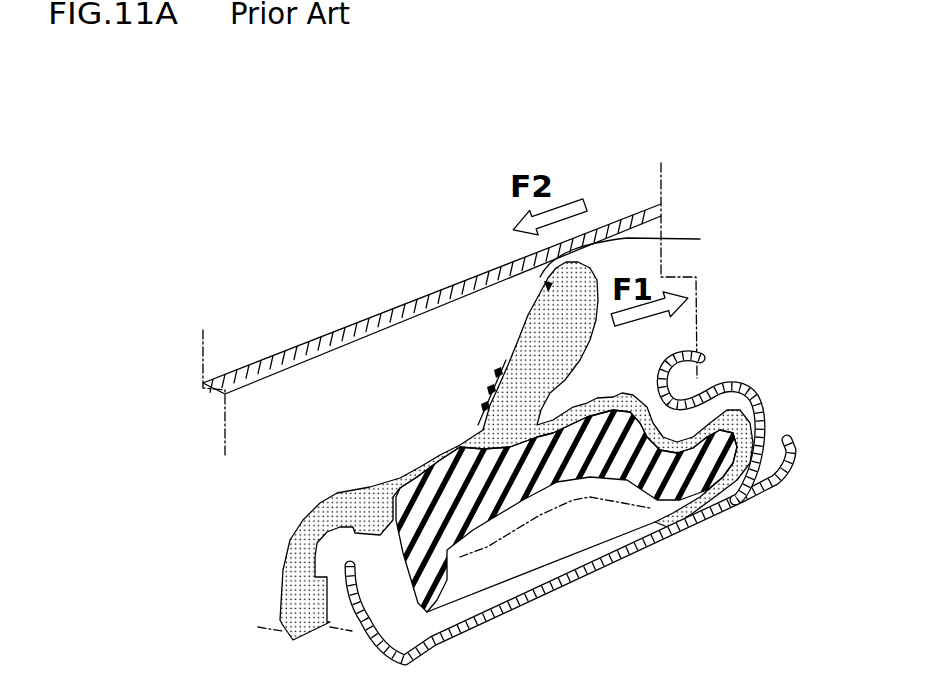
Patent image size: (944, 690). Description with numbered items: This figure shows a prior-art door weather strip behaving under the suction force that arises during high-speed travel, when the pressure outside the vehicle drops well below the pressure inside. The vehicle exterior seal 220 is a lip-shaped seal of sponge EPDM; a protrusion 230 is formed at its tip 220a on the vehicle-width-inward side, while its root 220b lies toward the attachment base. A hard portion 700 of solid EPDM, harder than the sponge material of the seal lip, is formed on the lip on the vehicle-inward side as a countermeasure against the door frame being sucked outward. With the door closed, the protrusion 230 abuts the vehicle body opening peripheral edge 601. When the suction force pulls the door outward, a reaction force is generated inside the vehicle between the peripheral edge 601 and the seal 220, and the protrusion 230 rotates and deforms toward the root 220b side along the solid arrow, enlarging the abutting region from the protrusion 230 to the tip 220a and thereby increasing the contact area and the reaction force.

The vehicle exterior seal 220 is at (513, 330).
The tip of the vehicle exterior seal 220a is at (700, 239).
The root of the vehicle exterior seal 220b is at (478, 420).
The protrusion 230 is at (533, 280).
The vehicle body opening peripheral edge 601 is at (627, 217).
The hard portion 700 is at (483, 400).